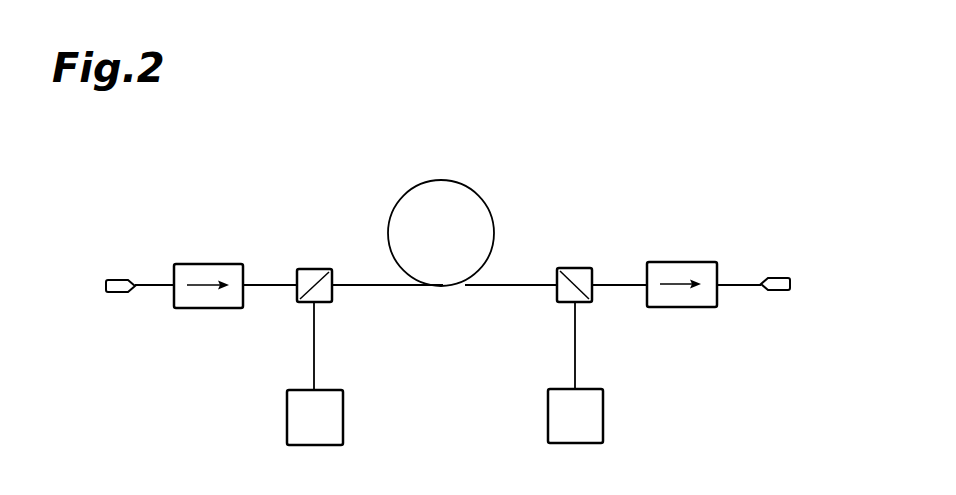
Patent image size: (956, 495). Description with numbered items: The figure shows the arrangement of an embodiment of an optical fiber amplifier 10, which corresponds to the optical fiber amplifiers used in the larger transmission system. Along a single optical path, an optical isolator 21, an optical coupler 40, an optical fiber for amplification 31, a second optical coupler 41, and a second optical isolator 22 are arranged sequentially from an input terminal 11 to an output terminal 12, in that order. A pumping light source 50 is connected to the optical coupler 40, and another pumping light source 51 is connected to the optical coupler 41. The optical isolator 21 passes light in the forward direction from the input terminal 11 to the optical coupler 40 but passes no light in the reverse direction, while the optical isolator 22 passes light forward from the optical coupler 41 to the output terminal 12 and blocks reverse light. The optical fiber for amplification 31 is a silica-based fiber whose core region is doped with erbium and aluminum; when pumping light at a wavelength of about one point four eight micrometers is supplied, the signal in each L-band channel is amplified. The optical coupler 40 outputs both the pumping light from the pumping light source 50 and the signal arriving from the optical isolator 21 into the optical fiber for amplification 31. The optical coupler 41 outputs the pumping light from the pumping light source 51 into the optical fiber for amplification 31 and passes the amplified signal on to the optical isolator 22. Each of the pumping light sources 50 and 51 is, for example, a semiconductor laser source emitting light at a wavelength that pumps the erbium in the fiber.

The optical fiber amplifier 10 is at (541, 145).
The input terminal 11 is at (123, 278).
The output terminal 12 is at (777, 277).
The optical isolator 21 is at (202, 263).
The optical isolator 22 is at (675, 261).
The optical fiber for amplification 31 is at (440, 178).
The optical coupler 40 is at (312, 268).
The optical coupler 41 is at (573, 268).
The pumping light source 50 is at (343, 416).
The pumping light source 51 is at (603, 415).